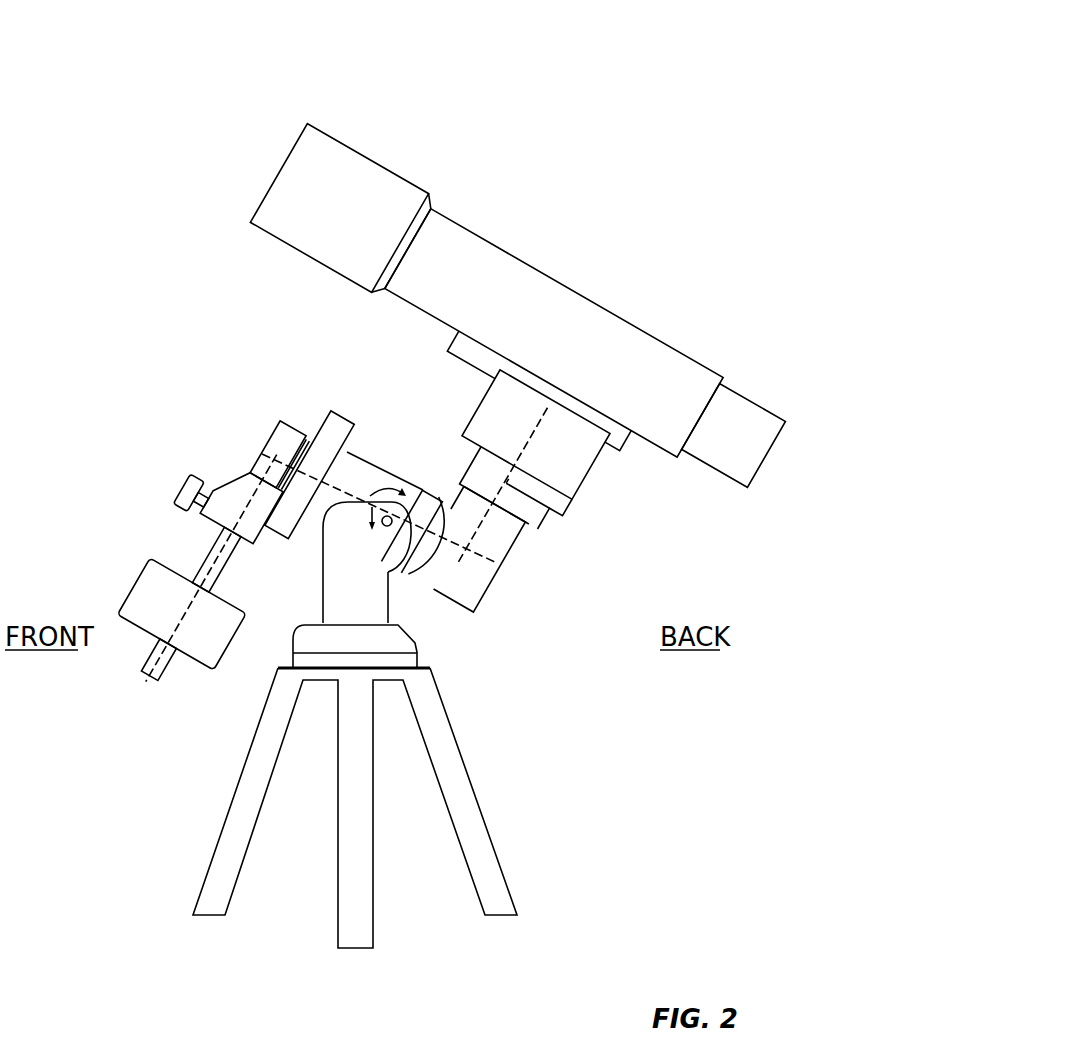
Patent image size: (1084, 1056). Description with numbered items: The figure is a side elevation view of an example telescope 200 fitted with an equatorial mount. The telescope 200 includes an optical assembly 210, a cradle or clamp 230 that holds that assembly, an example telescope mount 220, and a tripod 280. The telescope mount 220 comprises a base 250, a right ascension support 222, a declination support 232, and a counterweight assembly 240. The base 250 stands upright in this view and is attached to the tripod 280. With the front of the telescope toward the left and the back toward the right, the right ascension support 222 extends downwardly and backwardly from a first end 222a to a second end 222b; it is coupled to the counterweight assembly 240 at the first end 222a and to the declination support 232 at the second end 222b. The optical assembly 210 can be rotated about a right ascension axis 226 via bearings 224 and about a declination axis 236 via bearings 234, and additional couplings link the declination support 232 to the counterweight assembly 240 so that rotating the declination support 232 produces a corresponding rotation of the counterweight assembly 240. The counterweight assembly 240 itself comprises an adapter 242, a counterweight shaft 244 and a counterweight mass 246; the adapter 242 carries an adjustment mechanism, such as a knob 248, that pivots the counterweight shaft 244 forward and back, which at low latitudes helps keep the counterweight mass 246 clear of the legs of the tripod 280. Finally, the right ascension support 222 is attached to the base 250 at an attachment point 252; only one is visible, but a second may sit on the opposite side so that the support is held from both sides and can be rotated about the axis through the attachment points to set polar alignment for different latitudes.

The telescope 200 is at (646, 78).
The optical assembly 210 is at (522, 314).
The telescope mount 220 is at (158, 294).
The right ascension support 222 is at (378, 492).
The first end 222a is at (318, 462).
The second end 222b is at (415, 556).
The bearings 224 is at (412, 509).
The right ascension axis 226 is at (300, 494).
The cradle or clamp 230 is at (488, 380).
The declination support 232 is at (501, 501).
The bearings 234 is at (489, 434).
The declination axis 236 is at (546, 492).
The counterweight assembly 240 is at (130, 436).
The adapter 242 is at (253, 454).
The counterweight shaft 244 is at (179, 602).
The counterweight mass 246 is at (157, 614).
The knob 248 is at (159, 491).
The base 250 is at (336, 597).
The attachment point 252 is at (452, 600).
The tripod 280 is at (332, 808).